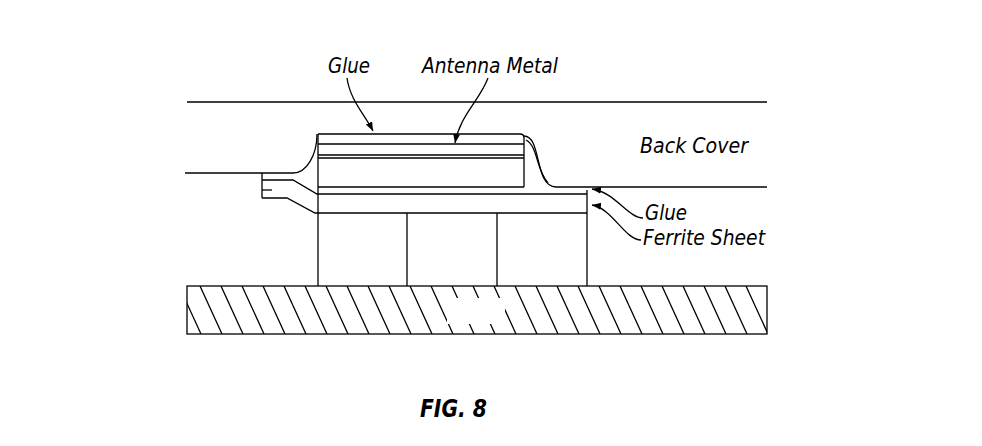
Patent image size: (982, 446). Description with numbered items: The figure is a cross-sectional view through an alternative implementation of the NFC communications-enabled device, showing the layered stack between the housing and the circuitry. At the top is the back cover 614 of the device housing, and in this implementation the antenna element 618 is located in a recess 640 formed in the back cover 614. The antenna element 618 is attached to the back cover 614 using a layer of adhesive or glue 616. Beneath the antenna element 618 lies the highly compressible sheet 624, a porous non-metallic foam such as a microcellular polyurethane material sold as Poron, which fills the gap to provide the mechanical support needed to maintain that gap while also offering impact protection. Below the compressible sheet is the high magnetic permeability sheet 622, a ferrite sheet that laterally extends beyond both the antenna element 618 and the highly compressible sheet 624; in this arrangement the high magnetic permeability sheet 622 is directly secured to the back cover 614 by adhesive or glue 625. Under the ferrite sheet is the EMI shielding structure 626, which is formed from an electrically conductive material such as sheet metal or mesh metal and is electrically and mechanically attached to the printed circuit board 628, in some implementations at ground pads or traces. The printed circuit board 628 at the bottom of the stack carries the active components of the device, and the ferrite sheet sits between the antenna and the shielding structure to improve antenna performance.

The back cover 614 is at (198, 135).
The adhesive or glue 616 is at (330, 140).
The antenna element 618 is at (337, 150).
The highly compressible sheet 624 is at (532, 168).
The recess 640 is at (508, 170).
The adhesive or glue 625 is at (263, 178).
The high magnetic permeability sheet 622 is at (263, 193).
The EMI shielding structure 626 is at (587, 277).
The printed circuit board 628 is at (200, 311).